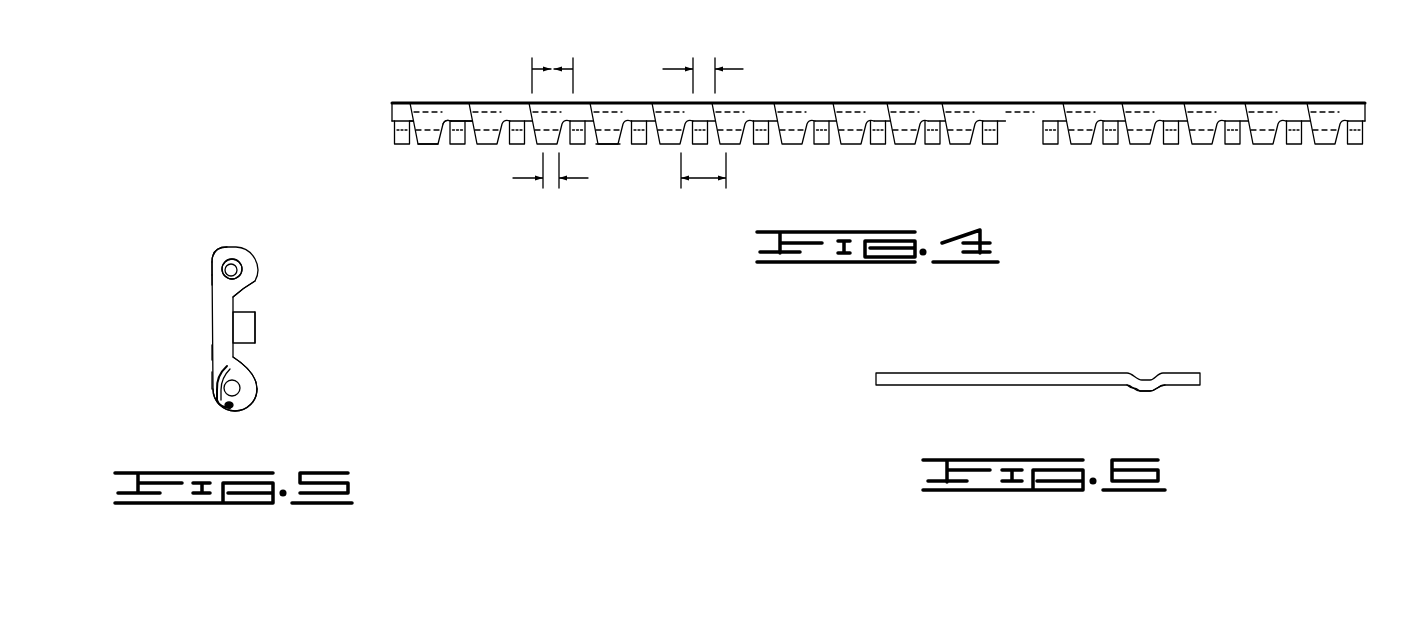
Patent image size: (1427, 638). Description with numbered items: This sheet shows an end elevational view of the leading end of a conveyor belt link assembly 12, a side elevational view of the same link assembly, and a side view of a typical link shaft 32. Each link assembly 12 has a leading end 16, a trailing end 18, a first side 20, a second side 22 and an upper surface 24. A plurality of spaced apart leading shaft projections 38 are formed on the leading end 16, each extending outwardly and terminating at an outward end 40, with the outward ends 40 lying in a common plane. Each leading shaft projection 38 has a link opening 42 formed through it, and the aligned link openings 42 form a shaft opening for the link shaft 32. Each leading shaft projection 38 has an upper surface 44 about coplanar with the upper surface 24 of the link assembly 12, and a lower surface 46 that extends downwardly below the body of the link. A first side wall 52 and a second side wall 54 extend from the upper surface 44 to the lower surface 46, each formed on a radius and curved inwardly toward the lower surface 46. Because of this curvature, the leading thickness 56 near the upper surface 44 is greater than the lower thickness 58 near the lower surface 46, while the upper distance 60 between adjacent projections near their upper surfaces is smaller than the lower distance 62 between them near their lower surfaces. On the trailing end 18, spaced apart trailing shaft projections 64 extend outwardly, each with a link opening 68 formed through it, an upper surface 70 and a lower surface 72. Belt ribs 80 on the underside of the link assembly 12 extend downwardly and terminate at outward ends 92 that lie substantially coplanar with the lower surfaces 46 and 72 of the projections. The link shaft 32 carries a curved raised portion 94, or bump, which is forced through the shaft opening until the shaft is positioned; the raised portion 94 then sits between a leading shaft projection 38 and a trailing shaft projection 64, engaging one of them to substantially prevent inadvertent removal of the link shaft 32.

In FIG. 4, the link assembly 12 is at (880, 102).
In FIG. 5, the link assembly 12 is at (212, 322).
In FIG. 4, the leading end 16 is at (462, 102).
In FIG. 5, the leading end 16 is at (213, 277).
In FIG. 5, the trailing end 18 is at (212, 380).
In FIG. 4, the first side 20 is at (392, 110).
In FIG. 4, the second side 22 is at (1367, 100).
In FIG. 4, the upper surface 24 is at (582, 102).
In FIG. 5, the upper surface 24 is at (212, 353).
In FIG. 6, the link shaft 32 is at (987, 373).
In FIG. 4, the leading shaft projection 38 is at (605, 144).
In FIG. 5, the leading shaft projection 38 is at (218, 257).
In FIG. 5, the outward end 40 is at (230, 245).
In FIG. 4, the link opening 42 is at (1023, 110).
In FIG. 5, the link opening 42 is at (238, 258).
In FIG. 4, the upper surface 44 is at (428, 102).
In FIG. 5, the upper surface 44 is at (212, 265).
In FIG. 4, the lower surface 46 is at (432, 145).
In FIG. 5, the lower surface 46 is at (258, 262).
In FIG. 4, the first side wall 52 is at (415, 125).
In FIG. 4, the second side wall 54 is at (443, 125).
In FIG. 4, the leading thickness 56 is at (555, 62).
In FIG. 4, the lower thickness 58 is at (582, 180).
In FIG. 4, the upper distance 60 is at (738, 68).
In FIG. 4, the lower distance 62 is at (703, 180).
In FIG. 4, the trailing shaft projection 64 is at (523, 144).
In FIG. 5, the trailing shaft projection 64 is at (223, 410).
In FIG. 5, the link opening 68 is at (242, 393).
In FIG. 5, the upper surface 70 is at (222, 398).
In FIG. 5, the lower surface 72 is at (257, 388).
In FIG. 5, the belt rib 80 is at (243, 326).
In FIG. 5, the outward end 92 is at (255, 327).
In FIG. 6, the curved raised portion 94 is at (1150, 390).